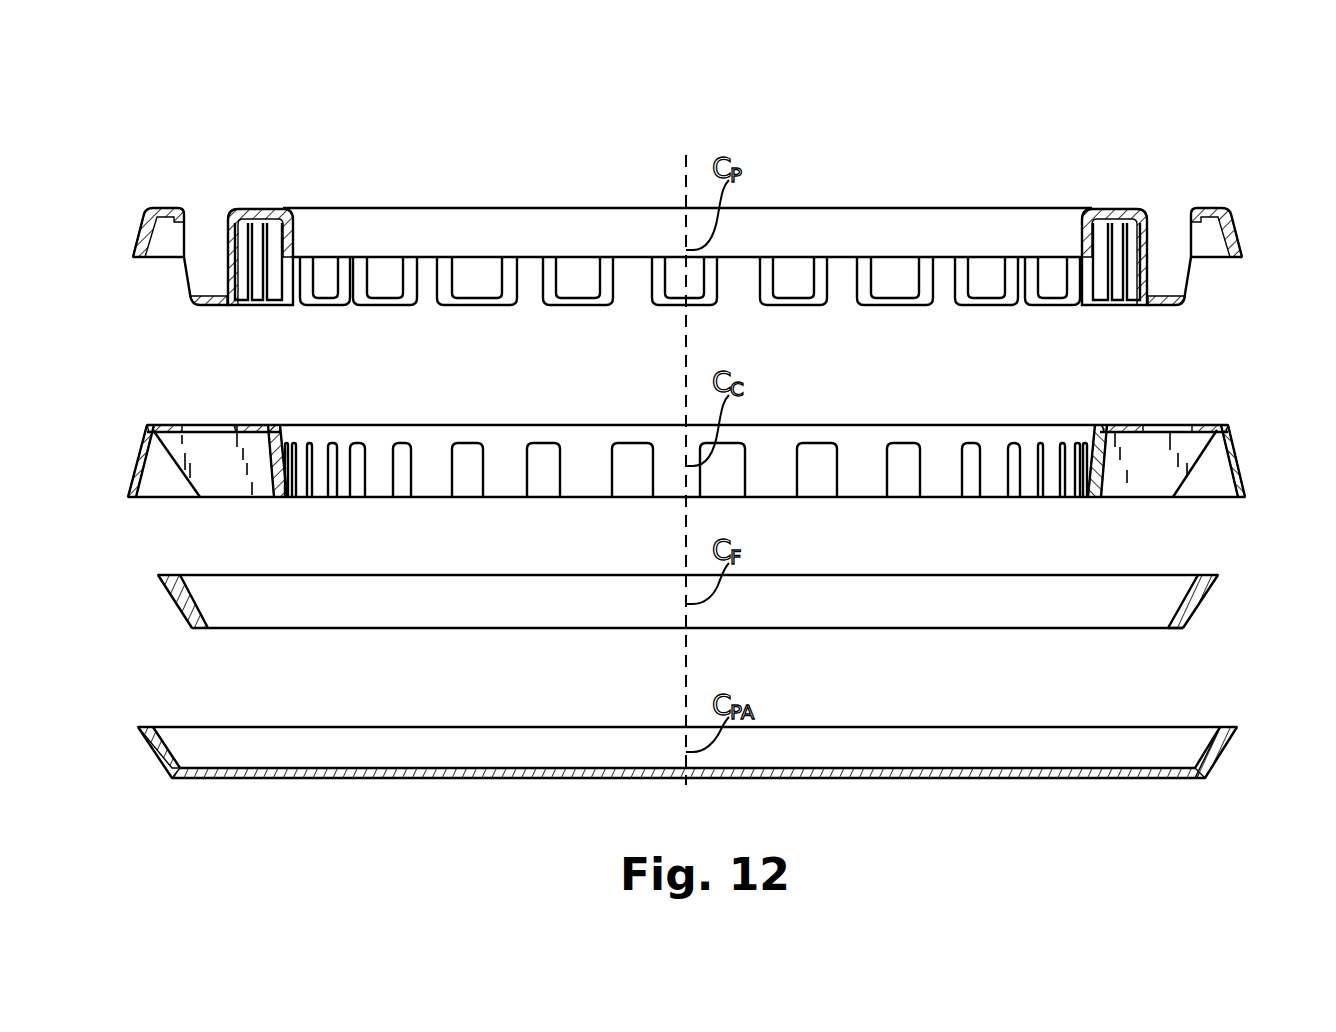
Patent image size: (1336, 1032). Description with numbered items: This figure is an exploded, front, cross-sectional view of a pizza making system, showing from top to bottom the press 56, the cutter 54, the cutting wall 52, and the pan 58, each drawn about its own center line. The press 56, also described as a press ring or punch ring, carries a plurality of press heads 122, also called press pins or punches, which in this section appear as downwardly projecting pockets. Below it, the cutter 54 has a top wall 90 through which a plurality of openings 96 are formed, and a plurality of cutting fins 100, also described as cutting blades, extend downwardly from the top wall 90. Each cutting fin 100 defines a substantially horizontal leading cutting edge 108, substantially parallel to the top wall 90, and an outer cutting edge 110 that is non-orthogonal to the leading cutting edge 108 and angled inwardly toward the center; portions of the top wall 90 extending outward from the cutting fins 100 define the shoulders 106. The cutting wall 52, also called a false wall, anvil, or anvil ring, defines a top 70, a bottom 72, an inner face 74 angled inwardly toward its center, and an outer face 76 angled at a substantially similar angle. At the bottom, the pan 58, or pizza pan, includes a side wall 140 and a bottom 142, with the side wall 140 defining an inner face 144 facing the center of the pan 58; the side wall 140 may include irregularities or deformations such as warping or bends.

The press 56 is at (732, 256).
The press heads 122 is at (1172, 271).
The cutter 54 is at (727, 444).
The cutting fins 100 is at (1207, 444).
The openings 96 is at (1149, 407).
The top wall 90 is at (1213, 435).
The shoulders 106 is at (1218, 449).
The outer cutting edge 110 is at (1205, 476).
The leading cutting edge 108 is at (1036, 507).
The cutting wall 52 is at (747, 606).
The top 70 is at (1185, 606).
The inner face 74 is at (1185, 609).
The bottom 72 is at (1178, 630).
The outer face 76 is at (1211, 622).
The pan 58 is at (732, 762).
The inner face 144 is at (1193, 745).
The side wall 140 is at (1199, 757).
The bottom 142 is at (1124, 779).